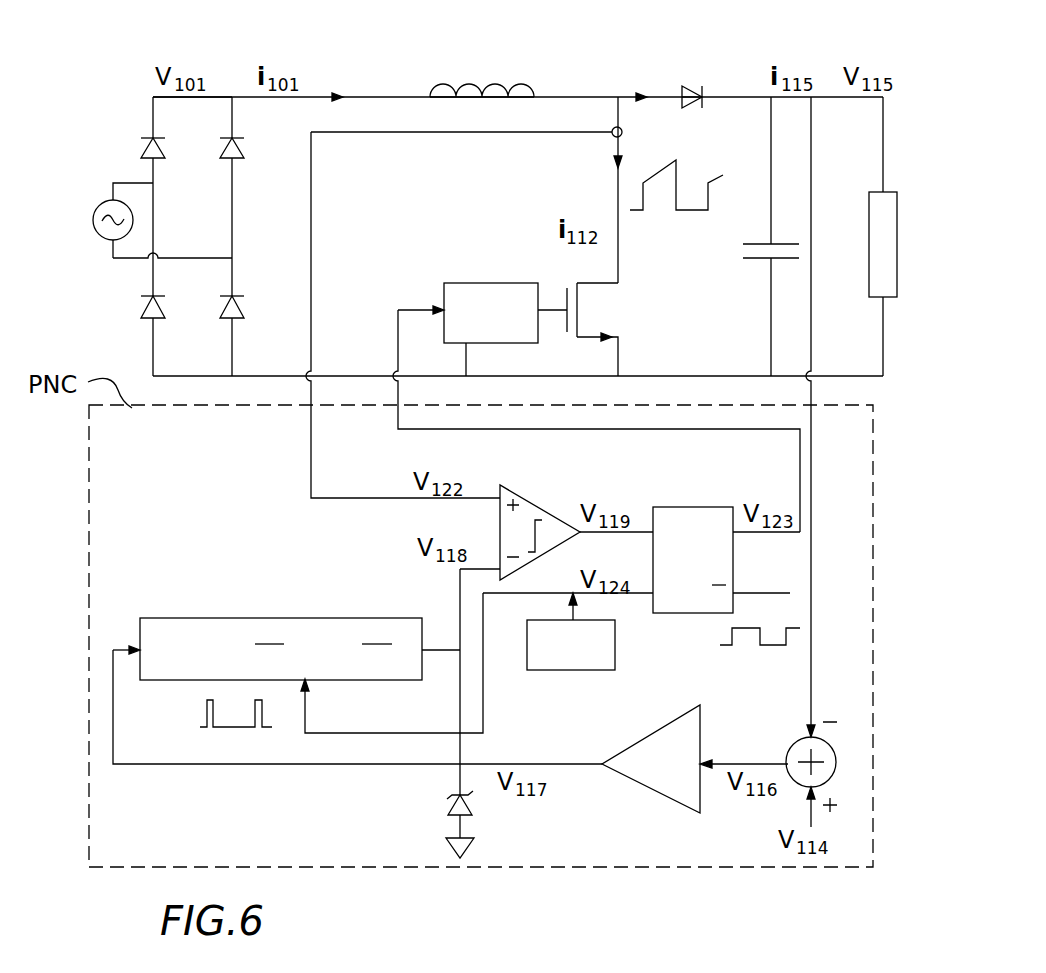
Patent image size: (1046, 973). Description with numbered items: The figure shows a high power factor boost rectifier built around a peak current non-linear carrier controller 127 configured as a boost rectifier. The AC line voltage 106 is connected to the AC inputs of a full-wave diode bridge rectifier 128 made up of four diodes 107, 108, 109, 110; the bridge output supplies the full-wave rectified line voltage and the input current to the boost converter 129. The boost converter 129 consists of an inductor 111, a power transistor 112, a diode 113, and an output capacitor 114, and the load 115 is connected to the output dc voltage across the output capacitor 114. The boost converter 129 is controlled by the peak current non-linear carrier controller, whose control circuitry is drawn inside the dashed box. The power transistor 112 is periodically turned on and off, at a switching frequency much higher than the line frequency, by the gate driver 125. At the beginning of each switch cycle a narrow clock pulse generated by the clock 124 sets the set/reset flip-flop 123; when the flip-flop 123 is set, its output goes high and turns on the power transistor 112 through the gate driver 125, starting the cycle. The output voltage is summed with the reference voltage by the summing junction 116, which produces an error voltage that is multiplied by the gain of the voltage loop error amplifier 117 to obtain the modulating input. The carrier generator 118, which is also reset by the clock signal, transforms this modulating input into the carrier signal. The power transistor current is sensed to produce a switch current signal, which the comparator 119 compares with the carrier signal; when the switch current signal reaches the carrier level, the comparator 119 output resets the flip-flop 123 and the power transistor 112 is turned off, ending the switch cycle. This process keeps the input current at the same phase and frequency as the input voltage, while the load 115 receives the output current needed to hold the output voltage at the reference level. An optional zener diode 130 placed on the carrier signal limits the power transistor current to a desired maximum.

The AC line voltage 106 is at (102, 238).
The diode 107 is at (143, 142).
The diode 108 is at (246, 148).
The diode 109 is at (158, 320).
The diode 110 is at (240, 320).
The inductor 111 is at (520, 90).
The power transistor 112 is at (592, 312).
The diode 113 is at (695, 104).
The output capacitor 114 is at (756, 258).
The load 115 is at (869, 265).
The summing junction 116 is at (798, 742).
The voltage loop error amplifier 117 is at (632, 782).
The carrier generator 118 is at (164, 618).
The comparator 119 is at (550, 505).
The set/reset flip-flop 123 is at (718, 507).
The clock 124 is at (548, 672).
The gate driver 125 is at (486, 283).
The peak current non-linear carrier controller 127 is at (692, 50).
The full-wave diode bridge rectifier 128 is at (202, 46).
The boost converter 129 is at (484, 58).
The zener diode 130 is at (448, 812).